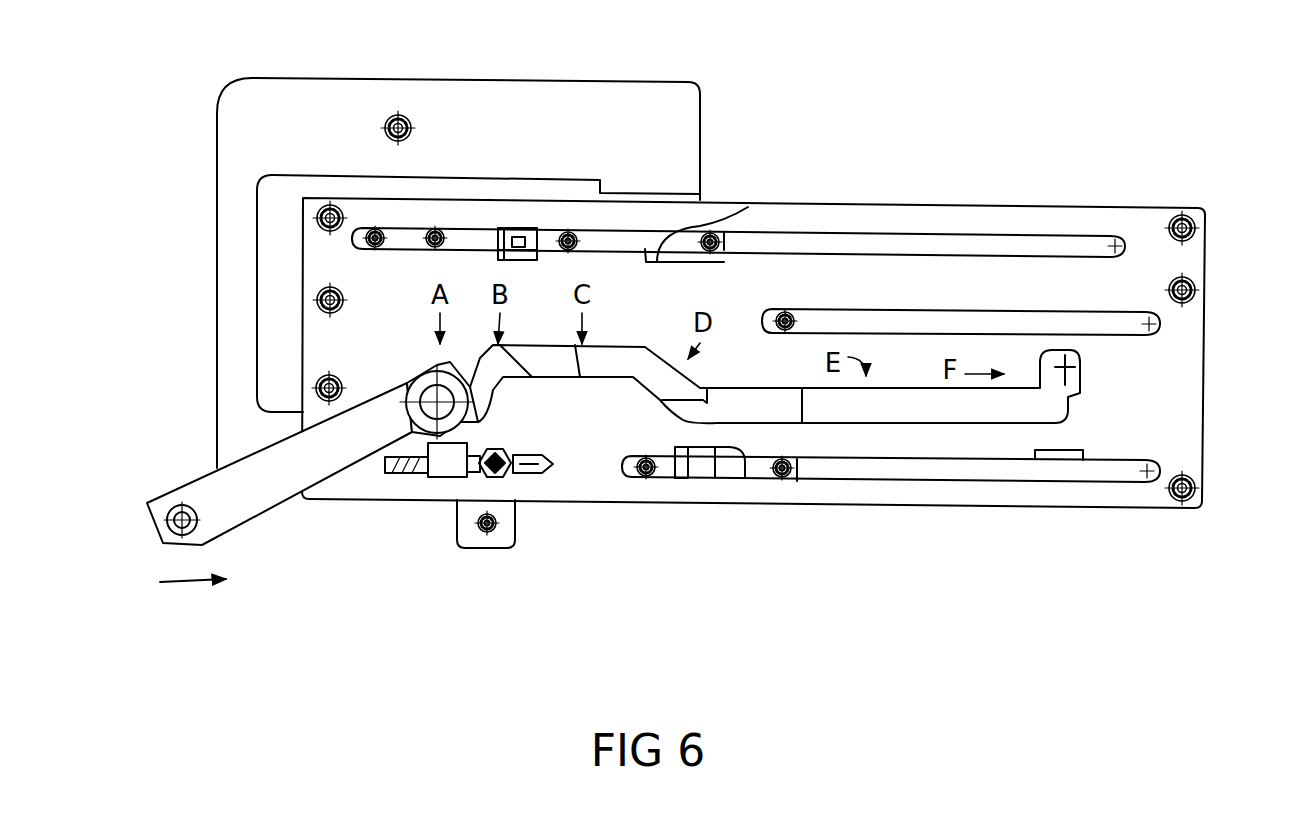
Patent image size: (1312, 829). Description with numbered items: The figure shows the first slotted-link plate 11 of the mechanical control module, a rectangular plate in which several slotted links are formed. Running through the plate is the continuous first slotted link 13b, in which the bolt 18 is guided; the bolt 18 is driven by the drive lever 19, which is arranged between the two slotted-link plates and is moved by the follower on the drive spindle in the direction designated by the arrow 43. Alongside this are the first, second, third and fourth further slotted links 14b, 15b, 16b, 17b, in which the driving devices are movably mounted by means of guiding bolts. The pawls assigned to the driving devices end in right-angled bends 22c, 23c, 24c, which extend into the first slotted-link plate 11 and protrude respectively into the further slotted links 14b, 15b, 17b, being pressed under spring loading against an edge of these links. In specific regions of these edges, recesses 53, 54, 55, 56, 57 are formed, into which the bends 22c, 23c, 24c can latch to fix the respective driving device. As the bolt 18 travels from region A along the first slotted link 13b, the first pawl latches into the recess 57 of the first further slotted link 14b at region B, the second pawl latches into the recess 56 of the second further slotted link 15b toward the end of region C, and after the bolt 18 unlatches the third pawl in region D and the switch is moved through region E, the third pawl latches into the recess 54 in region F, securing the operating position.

The first slotted-link plate 11 is at (1025, 230).
The continuous first slotted link 13b is at (1070, 400).
The first further slotted link 14b is at (553, 462).
The second further slotted link 15b is at (873, 252).
The third further slotted link 16b is at (1137, 340).
The fourth further slotted link 17b is at (889, 483).
The bolt 18 is at (405, 403).
The drive lever 19 is at (196, 478).
The right-angled bend of first pawl 22c is at (418, 476).
The right-angled bend of second pawl 23c is at (549, 232).
The right-angled bend of third pawl 24c is at (685, 479).
The arrow 43 is at (193, 610).
The recess 53 is at (750, 460).
The recess 54 is at (1063, 443).
The recess 55 is at (507, 262).
The recess 56 is at (748, 207).
The recess 57 is at (468, 440).